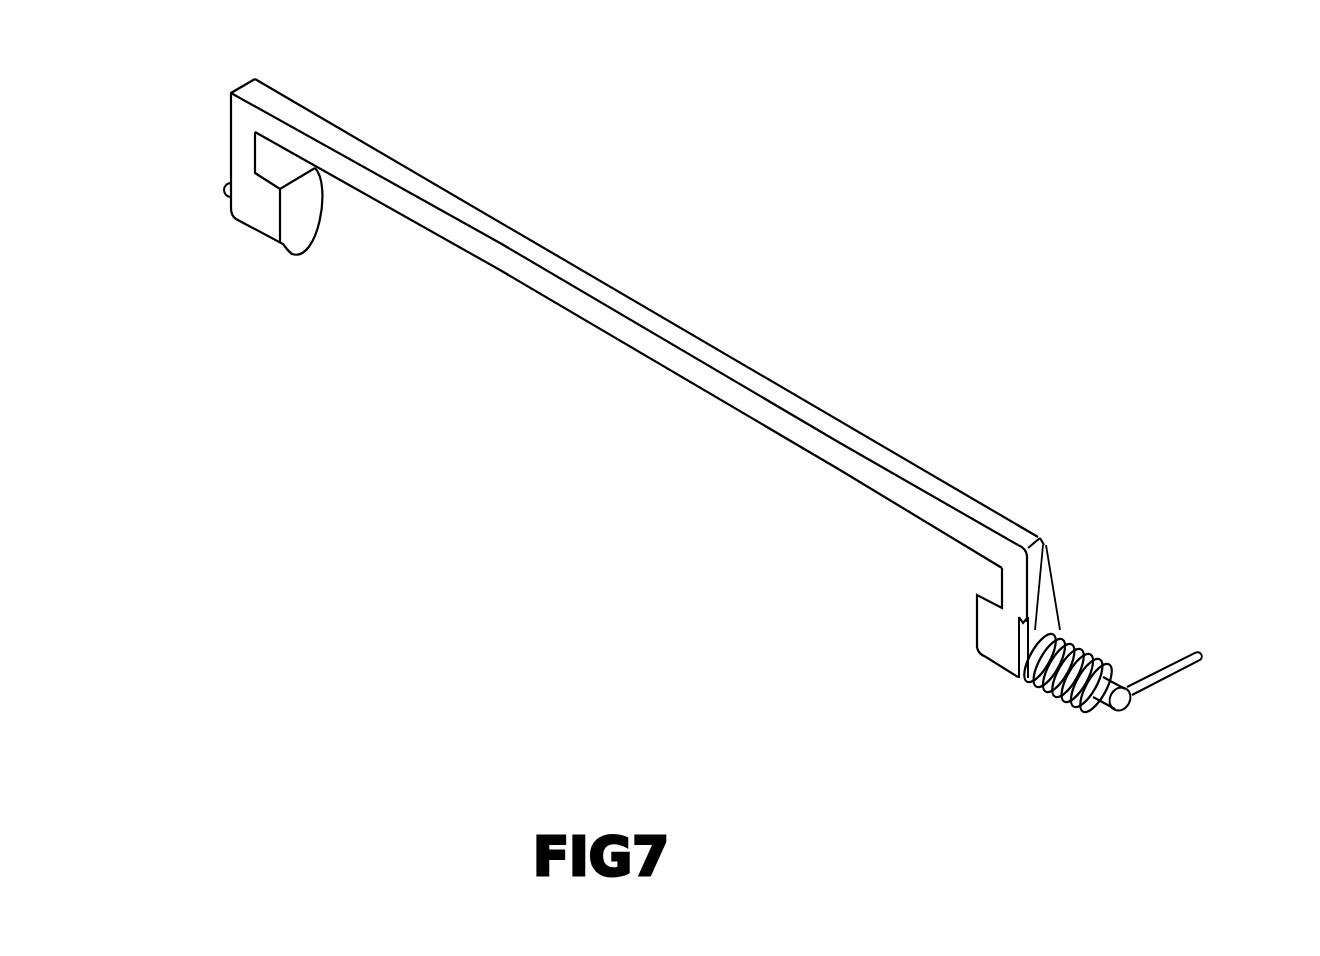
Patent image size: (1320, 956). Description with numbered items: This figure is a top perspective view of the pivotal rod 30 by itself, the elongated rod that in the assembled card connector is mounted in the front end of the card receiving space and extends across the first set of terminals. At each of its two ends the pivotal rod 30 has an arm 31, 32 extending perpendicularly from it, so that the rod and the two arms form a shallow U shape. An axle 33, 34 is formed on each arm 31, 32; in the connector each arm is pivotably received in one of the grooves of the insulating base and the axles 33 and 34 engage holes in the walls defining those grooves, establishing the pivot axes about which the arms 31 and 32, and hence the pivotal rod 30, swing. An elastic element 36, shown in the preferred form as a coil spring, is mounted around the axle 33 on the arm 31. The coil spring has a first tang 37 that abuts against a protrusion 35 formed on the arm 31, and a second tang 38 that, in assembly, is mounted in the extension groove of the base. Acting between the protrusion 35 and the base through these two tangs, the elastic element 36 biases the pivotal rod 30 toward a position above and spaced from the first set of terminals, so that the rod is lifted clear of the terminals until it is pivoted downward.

The pivotal rod 30 is at (655, 353).
The arm 31 is at (1022, 570).
The arm 32 is at (246, 125).
The axle 33 is at (1113, 708).
The axle 34 is at (225, 190).
The protrusion 35 is at (1044, 546).
The elastic element 36 is at (1050, 692).
The first tang 37 is at (1020, 658).
The second tang 38 is at (1172, 672).